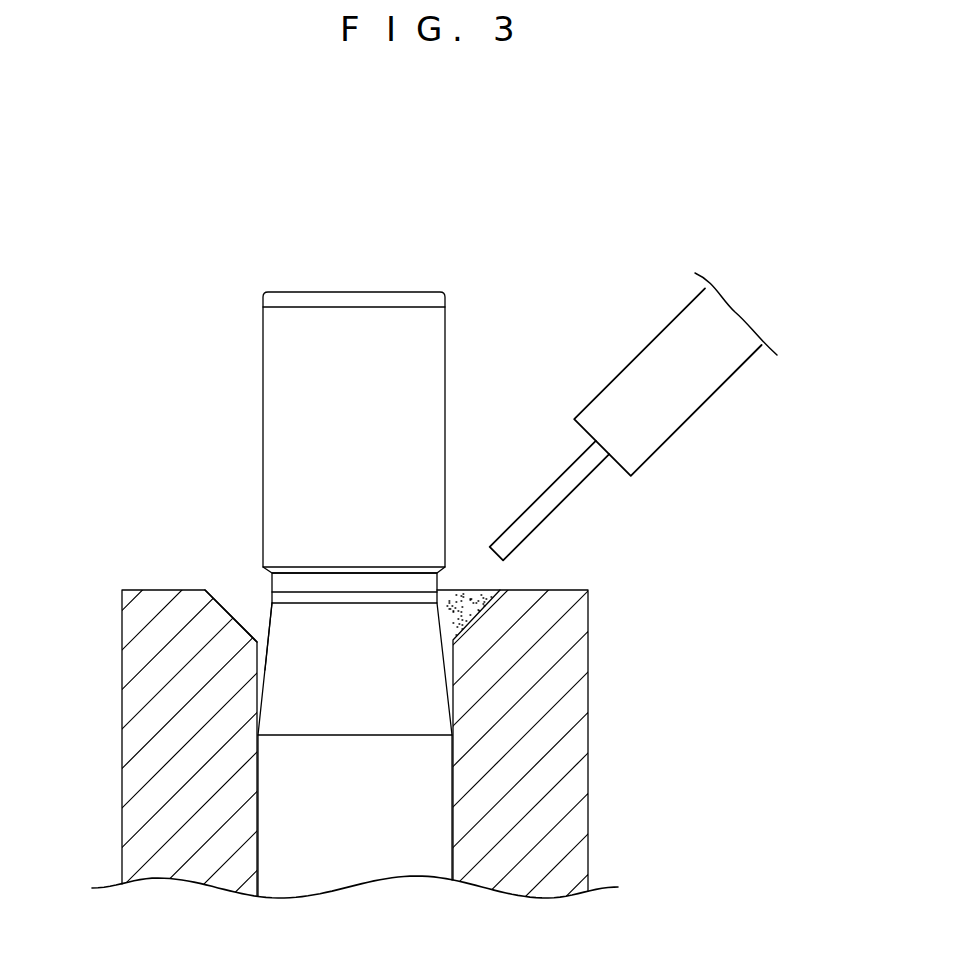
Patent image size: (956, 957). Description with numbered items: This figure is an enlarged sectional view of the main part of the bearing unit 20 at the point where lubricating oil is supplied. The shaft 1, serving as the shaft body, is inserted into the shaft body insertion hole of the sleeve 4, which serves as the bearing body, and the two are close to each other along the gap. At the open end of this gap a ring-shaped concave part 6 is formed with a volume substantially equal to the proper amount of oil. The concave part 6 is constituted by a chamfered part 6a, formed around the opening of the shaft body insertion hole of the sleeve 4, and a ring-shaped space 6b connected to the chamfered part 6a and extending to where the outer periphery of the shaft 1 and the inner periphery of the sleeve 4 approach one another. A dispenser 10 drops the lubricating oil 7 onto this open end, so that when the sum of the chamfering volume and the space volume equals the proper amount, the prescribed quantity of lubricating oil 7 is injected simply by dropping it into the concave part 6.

The shaft 1 is at (311, 333).
The sleeve 4 is at (546, 698).
The ring-shaped concave part 6 is at (162, 522).
The chamfered part 6a is at (224, 603).
The ring-shaped space 6b is at (262, 652).
The lubricating oil 7 is at (463, 600).
The dispenser 10 is at (703, 382).
The bearing unit 20 is at (627, 641).